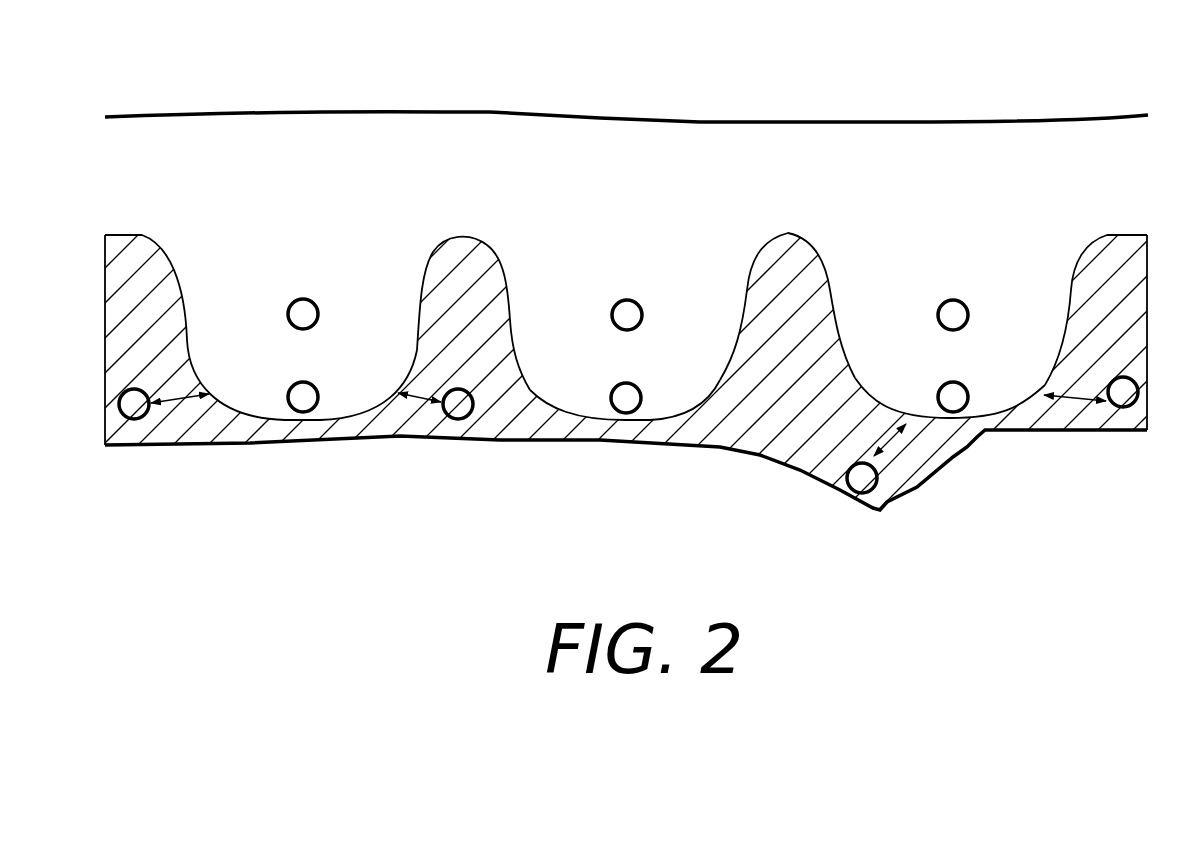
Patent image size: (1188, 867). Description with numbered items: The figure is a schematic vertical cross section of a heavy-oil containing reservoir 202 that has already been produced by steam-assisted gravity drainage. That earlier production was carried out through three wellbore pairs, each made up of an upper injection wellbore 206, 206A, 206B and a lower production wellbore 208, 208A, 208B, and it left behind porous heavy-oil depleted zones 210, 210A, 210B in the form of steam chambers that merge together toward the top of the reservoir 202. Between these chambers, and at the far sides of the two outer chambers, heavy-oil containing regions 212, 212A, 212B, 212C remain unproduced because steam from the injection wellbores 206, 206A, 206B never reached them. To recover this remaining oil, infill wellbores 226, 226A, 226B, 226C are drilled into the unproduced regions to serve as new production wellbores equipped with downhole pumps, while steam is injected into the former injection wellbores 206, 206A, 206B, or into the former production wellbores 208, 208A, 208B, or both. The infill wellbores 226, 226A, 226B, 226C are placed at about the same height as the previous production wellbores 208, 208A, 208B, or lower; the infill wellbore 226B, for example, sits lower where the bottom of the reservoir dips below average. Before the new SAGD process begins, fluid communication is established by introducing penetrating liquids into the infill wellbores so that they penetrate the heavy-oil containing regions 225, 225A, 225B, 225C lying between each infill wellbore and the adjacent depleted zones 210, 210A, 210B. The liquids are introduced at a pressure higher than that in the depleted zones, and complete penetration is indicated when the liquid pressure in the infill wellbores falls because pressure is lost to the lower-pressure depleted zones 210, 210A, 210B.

The heavy-oil containing reservoir 202 is at (182, 142).
The injection wellbore 206 is at (303, 298).
The injection wellbore 206A is at (682, 310).
The injection wellbore 206B is at (960, 299).
The production wellbore 208 is at (302, 382).
The production wellbore 208A is at (611, 392).
The production wellbore 208B is at (945, 383).
The heavy-oil depleted zone 210 is at (260, 280).
The heavy-oil depleted zone 210A is at (608, 282).
The heavy-oil depleted zone 210B is at (920, 283).
The heavy-oil containing region 212 is at (140, 250).
The heavy-oil containing region 212A is at (502, 222).
The heavy-oil containing region 212B is at (768, 248).
The heavy-oil containing region 212C is at (1113, 250).
The heavy-oil containing region 225 is at (172, 407).
The heavy-oil containing region 225A is at (385, 433).
The heavy-oil containing region 225B is at (893, 447).
The heavy-oil containing region 225C is at (1057, 410).
The infill wellbore 226 is at (153, 398).
The infill wellbore 226A is at (477, 360).
The infill wellbore 226B is at (852, 465).
The infill wellbore 226C is at (1103, 395).